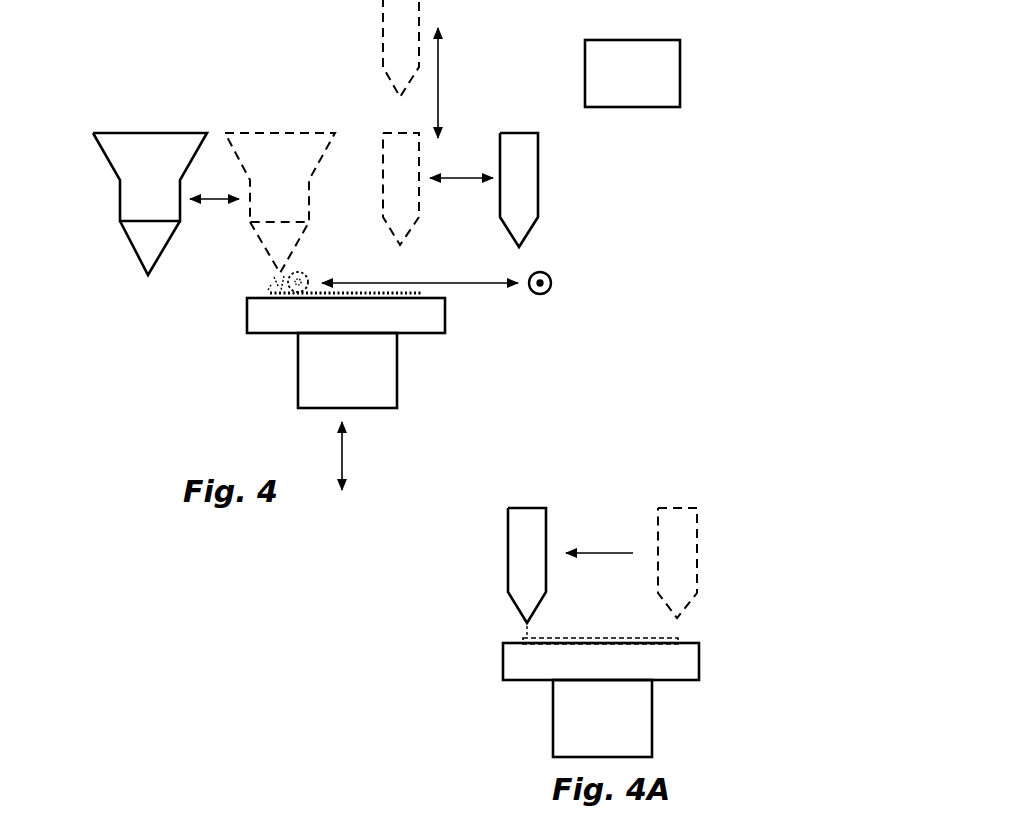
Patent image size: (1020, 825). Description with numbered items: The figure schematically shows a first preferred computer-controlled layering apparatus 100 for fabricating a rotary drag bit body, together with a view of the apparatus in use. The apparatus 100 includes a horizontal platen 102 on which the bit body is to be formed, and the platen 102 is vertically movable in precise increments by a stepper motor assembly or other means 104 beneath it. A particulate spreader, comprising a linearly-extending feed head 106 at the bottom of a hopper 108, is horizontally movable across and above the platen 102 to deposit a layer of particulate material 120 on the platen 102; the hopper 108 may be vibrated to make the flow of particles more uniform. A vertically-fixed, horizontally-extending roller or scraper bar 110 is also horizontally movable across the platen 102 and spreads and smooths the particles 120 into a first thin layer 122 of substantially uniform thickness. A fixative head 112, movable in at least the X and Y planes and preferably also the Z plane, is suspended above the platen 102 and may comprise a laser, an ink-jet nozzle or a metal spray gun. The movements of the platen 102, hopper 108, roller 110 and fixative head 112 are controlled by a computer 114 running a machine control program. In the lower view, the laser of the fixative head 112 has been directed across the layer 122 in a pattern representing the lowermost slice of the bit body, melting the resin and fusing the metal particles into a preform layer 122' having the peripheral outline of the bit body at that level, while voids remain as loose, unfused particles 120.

In FIG. 4, the apparatus 100 is at (654, 205).
In FIG. 4, the horizontal platen 102 is at (430, 318).
In FIG. 4A, the horizontal platen 102 is at (682, 663).
In FIG. 4, the stepper motor assembly 104 is at (367, 368).
In FIG. 4A, the stepper motor assembly 104 is at (623, 725).
In FIG. 4, the feed head 106 is at (143, 279).
In FIG. 4, the hopper 108 is at (140, 190).
In FIG. 4, the roller or scraper bar 110 is at (553, 278).
In FIG. 4, the fixative head 112 is at (522, 183).
In FIG. 4A, the fixative head 112 is at (520, 560).
In FIG. 4, the computer 114 is at (648, 85).
In FIG. 4, the particulate material 120 is at (272, 282).
In FIG. 4, the first thin layer 122 is at (315, 343).
In FIG. 4A, the preform layer 122' is at (652, 620).